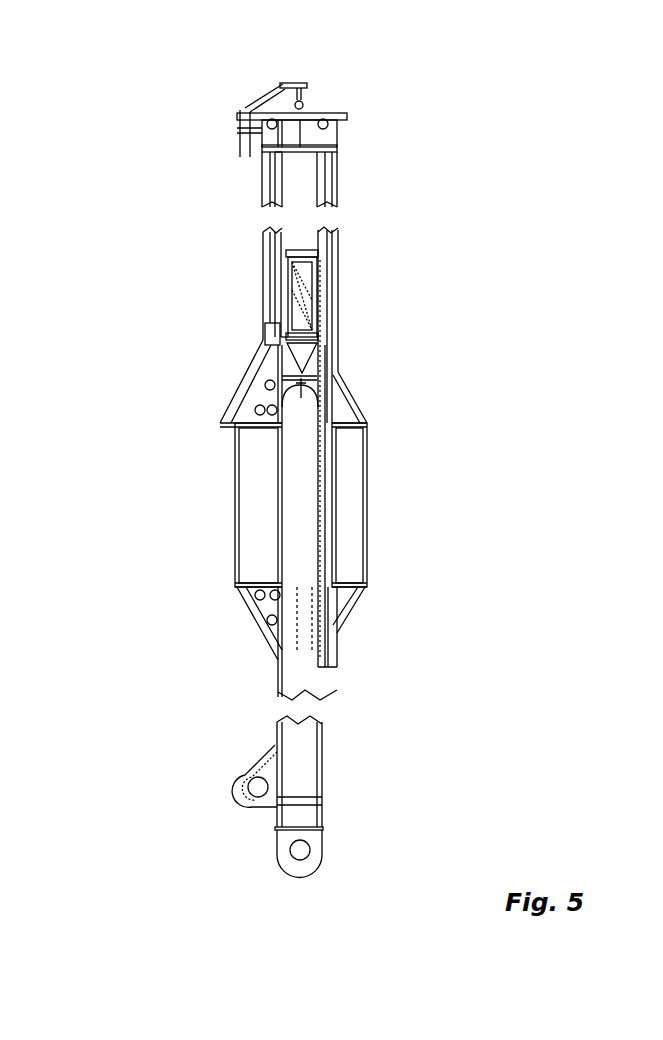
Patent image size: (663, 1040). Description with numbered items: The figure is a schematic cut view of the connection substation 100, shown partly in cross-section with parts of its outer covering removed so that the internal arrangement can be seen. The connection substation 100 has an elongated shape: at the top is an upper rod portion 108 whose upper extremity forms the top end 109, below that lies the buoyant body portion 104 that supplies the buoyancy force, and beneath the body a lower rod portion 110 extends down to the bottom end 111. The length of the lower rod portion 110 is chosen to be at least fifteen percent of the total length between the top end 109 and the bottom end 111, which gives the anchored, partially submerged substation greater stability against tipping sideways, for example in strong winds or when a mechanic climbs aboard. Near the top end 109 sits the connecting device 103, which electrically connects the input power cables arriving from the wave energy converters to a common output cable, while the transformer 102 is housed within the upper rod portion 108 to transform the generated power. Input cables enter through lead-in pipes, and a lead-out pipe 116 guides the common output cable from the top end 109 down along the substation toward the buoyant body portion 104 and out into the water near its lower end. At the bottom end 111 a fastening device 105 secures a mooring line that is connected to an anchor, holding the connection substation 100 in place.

The connection substation 100 is at (185, 62).
The connecting device 103 is at (318, 100).
The top end 109 is at (299, 152).
The upper rod portion 108 is at (216, 252).
The lead-out pipe 116 is at (334, 265).
The transformer 102 is at (291, 280).
The buoyant body portion 104 is at (216, 493).
The lower rod portion 110 is at (259, 676).
The bottom end 111 is at (295, 826).
The fastening device 105 is at (250, 835).